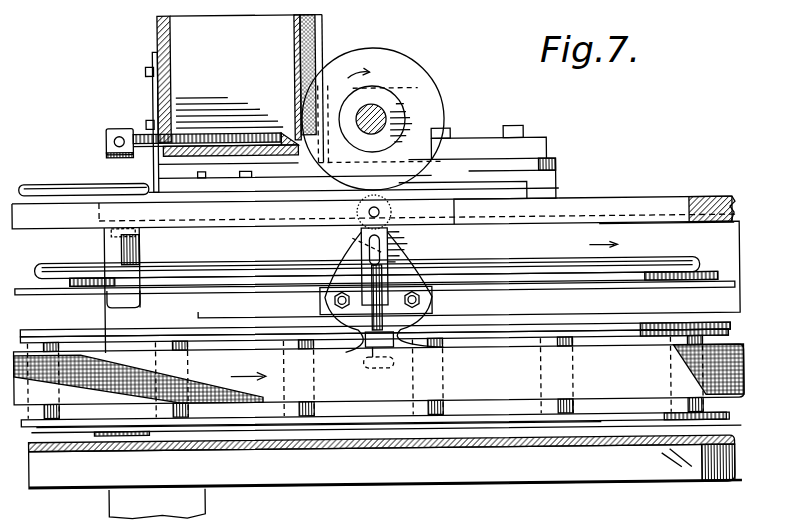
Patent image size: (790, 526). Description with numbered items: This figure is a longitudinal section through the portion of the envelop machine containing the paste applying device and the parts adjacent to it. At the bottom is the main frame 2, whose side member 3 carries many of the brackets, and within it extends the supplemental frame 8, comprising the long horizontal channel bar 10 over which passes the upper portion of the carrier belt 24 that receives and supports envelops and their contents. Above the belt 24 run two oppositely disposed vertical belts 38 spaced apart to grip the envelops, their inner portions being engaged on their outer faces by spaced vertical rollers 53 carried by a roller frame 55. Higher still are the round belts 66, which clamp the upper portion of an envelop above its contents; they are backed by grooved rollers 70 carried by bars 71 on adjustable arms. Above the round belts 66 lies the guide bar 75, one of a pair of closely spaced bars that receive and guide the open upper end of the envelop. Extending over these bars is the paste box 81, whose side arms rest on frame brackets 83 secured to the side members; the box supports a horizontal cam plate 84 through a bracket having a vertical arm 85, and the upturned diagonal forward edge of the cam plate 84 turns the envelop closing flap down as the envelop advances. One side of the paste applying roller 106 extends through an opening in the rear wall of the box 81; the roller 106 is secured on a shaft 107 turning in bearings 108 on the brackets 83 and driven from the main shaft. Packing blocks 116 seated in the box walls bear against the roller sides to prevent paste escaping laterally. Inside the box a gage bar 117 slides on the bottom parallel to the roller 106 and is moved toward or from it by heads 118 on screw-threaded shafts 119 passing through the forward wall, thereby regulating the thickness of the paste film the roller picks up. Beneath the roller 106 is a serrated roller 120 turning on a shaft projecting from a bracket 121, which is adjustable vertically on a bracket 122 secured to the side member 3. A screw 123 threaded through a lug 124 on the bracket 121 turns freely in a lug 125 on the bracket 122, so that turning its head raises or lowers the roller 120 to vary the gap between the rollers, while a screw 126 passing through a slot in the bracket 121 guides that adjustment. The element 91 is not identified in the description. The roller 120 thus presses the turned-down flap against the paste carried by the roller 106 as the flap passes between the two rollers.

The main frame 2 is at (107, 504).
The side member 3 is at (648, 235).
The supplemental frame 8 is at (276, 481).
The channel bar 10 is at (225, 447).
The belt 24 is at (598, 445).
The vertical belts 38 is at (378, 377).
The vertical rollers 53 is at (545, 343).
The roller frame 55 is at (616, 333).
The round belts 66 is at (55, 266).
The grooved rollers 70 is at (212, 266).
The bars 71 is at (78, 286).
The bar 75 is at (638, 191).
The paste box 81 is at (178, 36).
The brackets 83 is at (545, 184).
The cam plate 84 is at (80, 179).
The vertical arm 85 is at (157, 85).
The base 91 is at (420, 523).
The paste applying roller 106 is at (396, 62).
The shaft 107 is at (392, 120).
The bearings 108 is at (480, 133).
The packing blocks 116 is at (322, 65).
The gage bar 117 is at (284, 128).
The heads 118 is at (278, 129).
The screw-threaded shafts 119 is at (143, 126).
The serrated roller 120 is at (357, 211).
The bracket 121 is at (398, 241).
The bracket 122 is at (432, 301).
The screw 123 is at (367, 337).
The lug 124 is at (440, 345).
The lug 125 is at (360, 360).
The screw 126 is at (350, 249).